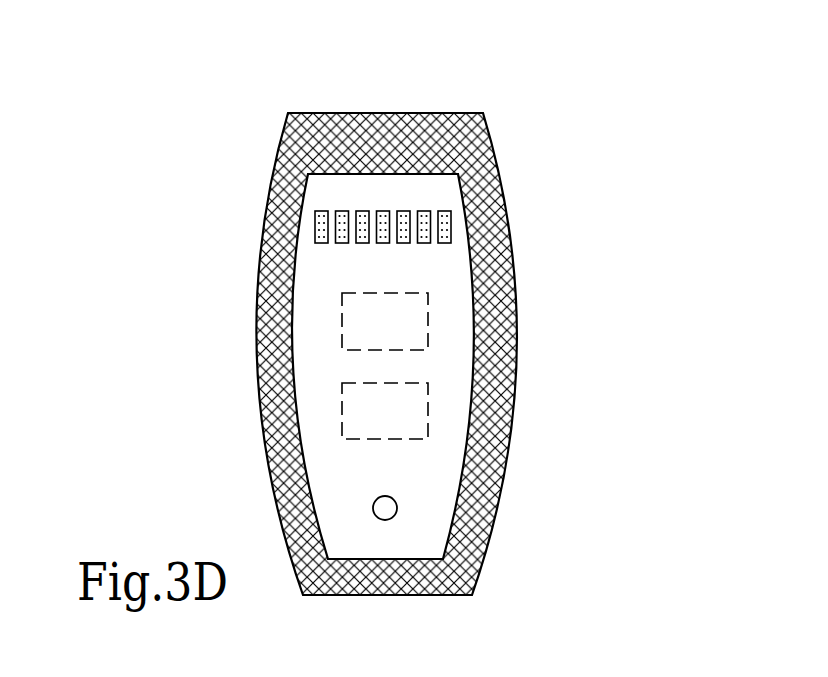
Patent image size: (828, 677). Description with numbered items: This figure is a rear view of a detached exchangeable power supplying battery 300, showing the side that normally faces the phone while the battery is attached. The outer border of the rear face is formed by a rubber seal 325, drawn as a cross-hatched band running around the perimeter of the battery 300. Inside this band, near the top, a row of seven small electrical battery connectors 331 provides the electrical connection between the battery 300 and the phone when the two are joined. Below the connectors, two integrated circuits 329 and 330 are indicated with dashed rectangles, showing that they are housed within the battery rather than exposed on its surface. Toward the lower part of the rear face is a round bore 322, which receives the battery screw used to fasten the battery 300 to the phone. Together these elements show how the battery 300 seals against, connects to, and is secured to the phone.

The power supplying battery 300 is at (600, 122).
The bore 322 is at (397, 510).
The rubber seal 325 is at (405, 137).
The integrated circuit 329 is at (385, 321).
The integrated circuit 330 is at (385, 411).
The electrical battery connectors 331 is at (313, 247).